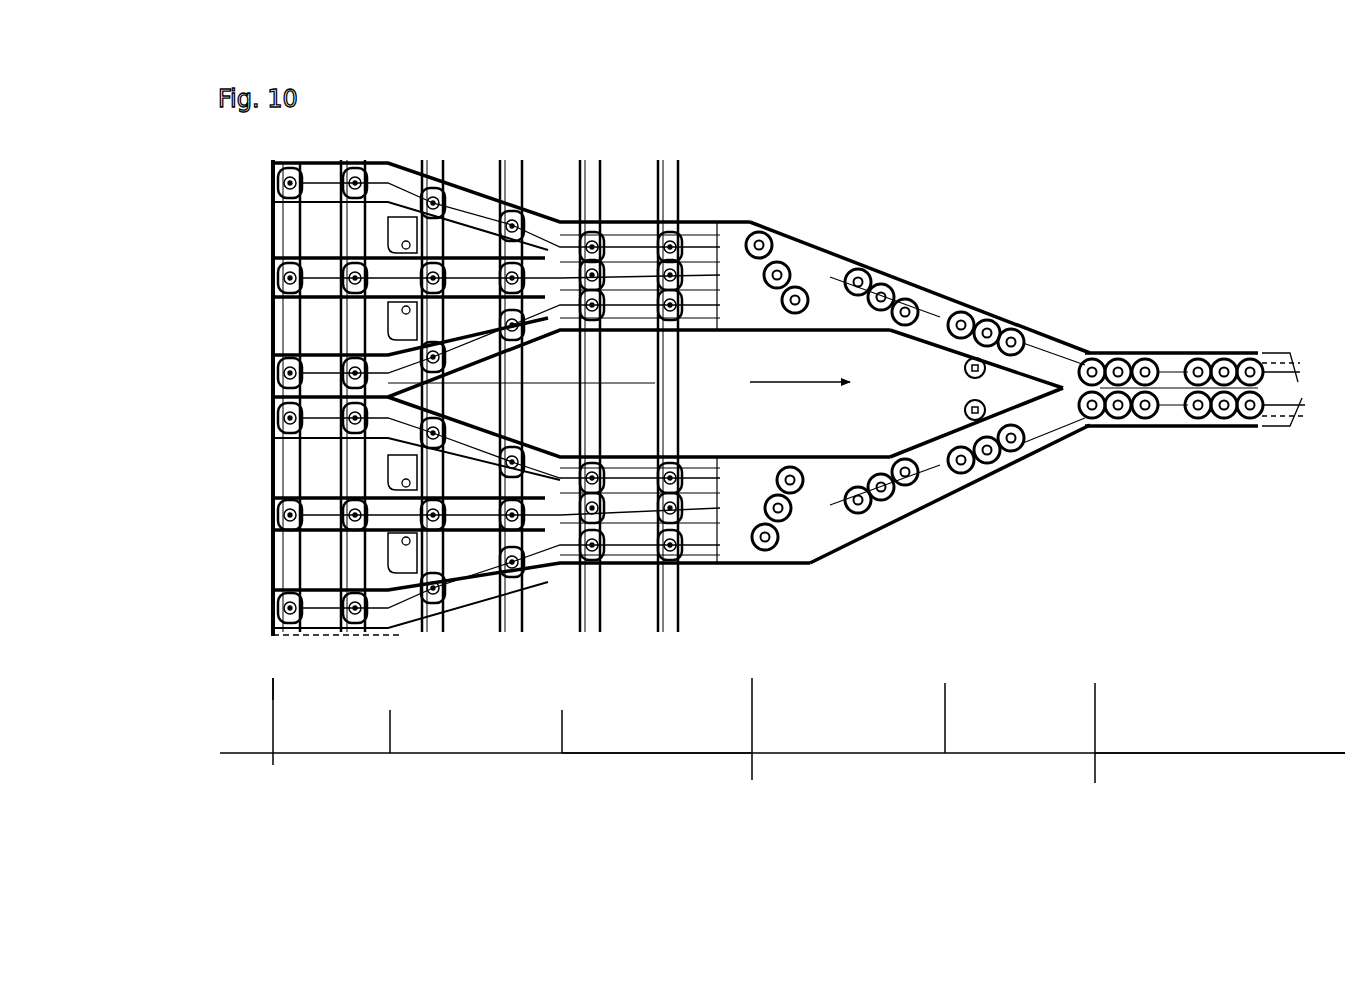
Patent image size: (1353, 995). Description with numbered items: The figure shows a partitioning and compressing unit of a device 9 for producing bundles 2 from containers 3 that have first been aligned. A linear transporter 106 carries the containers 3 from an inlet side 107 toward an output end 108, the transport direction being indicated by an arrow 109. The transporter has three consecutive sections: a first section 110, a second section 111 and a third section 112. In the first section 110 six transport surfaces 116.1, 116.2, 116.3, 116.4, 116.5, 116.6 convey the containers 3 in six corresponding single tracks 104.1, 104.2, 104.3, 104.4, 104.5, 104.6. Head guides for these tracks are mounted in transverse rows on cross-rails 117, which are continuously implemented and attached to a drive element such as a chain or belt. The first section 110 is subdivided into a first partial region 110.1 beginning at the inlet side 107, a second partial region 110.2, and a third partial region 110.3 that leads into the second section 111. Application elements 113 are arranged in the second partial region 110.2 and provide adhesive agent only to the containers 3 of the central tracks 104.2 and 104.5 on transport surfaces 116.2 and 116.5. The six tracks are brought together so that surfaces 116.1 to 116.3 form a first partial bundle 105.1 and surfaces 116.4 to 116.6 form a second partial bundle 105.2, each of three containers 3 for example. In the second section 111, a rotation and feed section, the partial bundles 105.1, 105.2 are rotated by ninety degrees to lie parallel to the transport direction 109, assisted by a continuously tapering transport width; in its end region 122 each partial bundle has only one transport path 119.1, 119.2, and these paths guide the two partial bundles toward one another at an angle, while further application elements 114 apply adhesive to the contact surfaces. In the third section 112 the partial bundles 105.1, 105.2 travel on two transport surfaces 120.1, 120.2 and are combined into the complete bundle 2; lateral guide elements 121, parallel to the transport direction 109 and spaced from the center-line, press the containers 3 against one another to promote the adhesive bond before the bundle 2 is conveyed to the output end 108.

The single track 104.1 is at (436, 206).
The transport surface 116.1 is at (433, 215).
The single track 104.2 is at (290, 280).
The transport surface 116.2 is at (439, 276).
The single track 104.3 is at (505, 351).
The transport surface 116.3 is at (432, 339).
The single track 104.4 is at (275, 398).
The transport surface 116.4 is at (435, 448).
The single track 104.5 is at (290, 515).
The transport surface 116.5 is at (432, 511).
The single track 104.6 is at (465, 586).
The transport surface 116.6 is at (432, 576).
The cross-rail 117 is at (497, 158).
The linear transporter 106 is at (538, 205).
The apparatus 9 is at (753, 165).
The partial bundle 105.1 is at (788, 266).
The partial bundle 105.2 is at (789, 528).
The container 3 is at (905, 300).
The transport path 119.1 is at (937, 300).
The transport path 119.2 is at (935, 482).
The lateral guide element 121 is at (1159, 343).
The bundle 2 is at (1223, 350).
The transport surface 120.1 is at (1284, 350).
The transport surface 120.2 is at (1277, 412).
The arrow 109 is at (800, 365).
The application element 113 is at (403, 550).
The further application element 114 is at (985, 380).
The inlet side 107 is at (217, 690).
The output end 108 is at (1327, 712).
The first section 110 is at (782, 733).
The first partial region 110.1 is at (348, 731).
The second partial region 110.2 is at (504, 731).
The third partial region 110.3 is at (657, 739).
The second section 111 is at (902, 736).
The end region 122 is at (1044, 733).
The third section 112 is at (1220, 771).